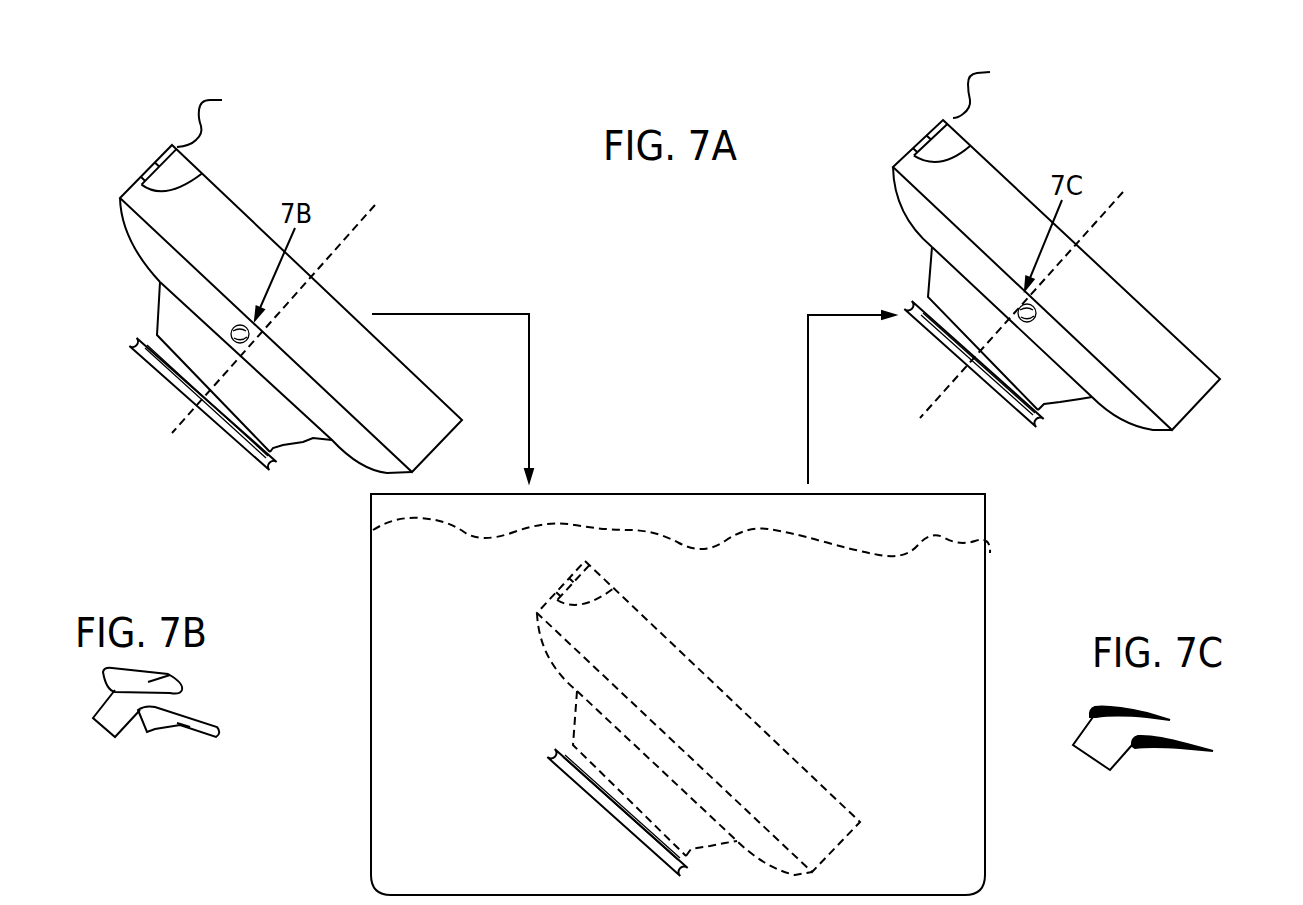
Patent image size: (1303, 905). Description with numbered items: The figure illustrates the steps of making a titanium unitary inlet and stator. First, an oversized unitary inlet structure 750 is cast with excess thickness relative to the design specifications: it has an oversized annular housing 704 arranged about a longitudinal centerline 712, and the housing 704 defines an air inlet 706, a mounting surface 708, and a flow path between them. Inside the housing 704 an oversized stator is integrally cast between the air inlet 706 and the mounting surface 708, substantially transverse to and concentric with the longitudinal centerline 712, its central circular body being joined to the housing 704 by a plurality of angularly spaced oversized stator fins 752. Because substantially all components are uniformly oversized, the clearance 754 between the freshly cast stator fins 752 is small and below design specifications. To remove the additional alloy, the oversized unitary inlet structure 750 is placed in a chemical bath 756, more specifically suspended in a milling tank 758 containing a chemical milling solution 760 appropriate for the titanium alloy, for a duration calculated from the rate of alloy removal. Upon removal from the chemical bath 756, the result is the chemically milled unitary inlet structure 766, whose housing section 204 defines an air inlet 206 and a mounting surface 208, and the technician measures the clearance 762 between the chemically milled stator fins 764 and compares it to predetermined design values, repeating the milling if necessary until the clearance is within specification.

In FIG. 7A, the oversized unitary inlet structure 750 is at (273, 173).
In FIG. 7A, the oversized annular housing 704 is at (133, 275).
In FIG. 7A, the air inlet 706 is at (150, 383).
In FIG. 7A, the mounting surface 708 is at (220, 115).
In FIG. 7A, the longitudinal centerline 712 is at (647, 314).
In FIG. 7A, the chemically milled unitary inlet structure 766 is at (1046, 128).
In FIG. 7A, the housing section 204 is at (900, 233).
In FIG. 7A, the air inlet 206 is at (920, 341).
In FIG. 7A, the mounting surface 208 is at (994, 83).
In FIG. 7A, the chemical bath 756 is at (659, 469).
In FIG. 7A, the milling tank 758 is at (372, 837).
In FIG. 7A, the chemical milling solution 760 is at (471, 797).
In FIG. 7B, the oversized stator fins 752 is at (170, 675).
In FIG. 7B, the clearance 754 is at (105, 736).
In FIG. 7C, the chemically milled stator fins 764 is at (1157, 712).
In FIG. 7C, the clearance 762 is at (1088, 752).